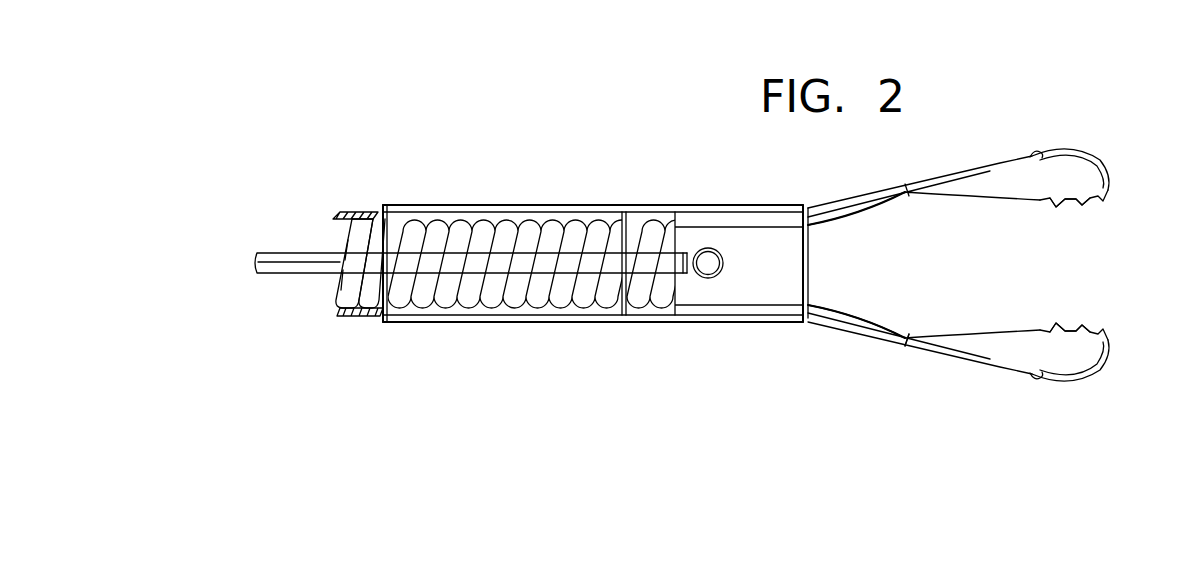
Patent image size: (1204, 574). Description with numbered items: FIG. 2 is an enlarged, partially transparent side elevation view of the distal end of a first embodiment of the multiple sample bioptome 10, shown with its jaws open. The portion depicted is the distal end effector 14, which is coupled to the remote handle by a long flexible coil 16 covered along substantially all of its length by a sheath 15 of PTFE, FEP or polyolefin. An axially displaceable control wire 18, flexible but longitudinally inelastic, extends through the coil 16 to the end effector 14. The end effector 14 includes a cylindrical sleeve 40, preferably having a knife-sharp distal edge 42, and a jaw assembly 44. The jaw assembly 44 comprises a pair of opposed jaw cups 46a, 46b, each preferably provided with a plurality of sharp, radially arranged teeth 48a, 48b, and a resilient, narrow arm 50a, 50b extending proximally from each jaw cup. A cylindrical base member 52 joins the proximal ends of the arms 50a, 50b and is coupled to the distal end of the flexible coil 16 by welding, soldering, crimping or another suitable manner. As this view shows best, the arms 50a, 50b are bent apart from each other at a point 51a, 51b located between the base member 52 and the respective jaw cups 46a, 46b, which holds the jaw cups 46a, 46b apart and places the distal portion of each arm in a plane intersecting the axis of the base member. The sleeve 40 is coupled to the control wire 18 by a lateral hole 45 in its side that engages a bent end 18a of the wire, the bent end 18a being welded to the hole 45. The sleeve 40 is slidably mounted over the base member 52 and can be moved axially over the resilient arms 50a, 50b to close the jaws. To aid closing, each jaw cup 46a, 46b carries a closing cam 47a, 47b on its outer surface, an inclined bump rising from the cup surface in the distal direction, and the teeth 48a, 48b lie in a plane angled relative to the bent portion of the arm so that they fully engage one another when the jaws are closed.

The multiple sample bioptome 10 is at (388, 132).
The distal end effector 14 is at (608, 160).
The sheath 15 is at (348, 318).
The flexible coil 16 is at (360, 208).
The control wire 18 is at (262, 250).
The bent end 18a is at (695, 280).
The cylindrical sleeve 40 is at (522, 204).
The distal edge 42 is at (808, 206).
The jaw assembly 44 is at (934, 368).
The lateral hole 45 is at (724, 262).
The jaw cup 46a is at (1095, 162).
The jaw cup 46b is at (1102, 352).
The closing cam 47a is at (1037, 148).
The closing cam 47b is at (1036, 385).
The teeth 48a is at (1066, 220).
The teeth 48b is at (1068, 318).
The resilient arm 50a is at (865, 200).
The resilient arm 50b is at (836, 328).
The bend point 51a is at (815, 224).
The bend point 51b is at (816, 305).
The cylindrical base member 52 is at (660, 205).